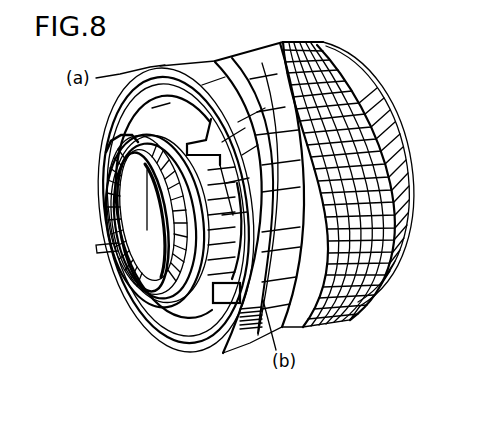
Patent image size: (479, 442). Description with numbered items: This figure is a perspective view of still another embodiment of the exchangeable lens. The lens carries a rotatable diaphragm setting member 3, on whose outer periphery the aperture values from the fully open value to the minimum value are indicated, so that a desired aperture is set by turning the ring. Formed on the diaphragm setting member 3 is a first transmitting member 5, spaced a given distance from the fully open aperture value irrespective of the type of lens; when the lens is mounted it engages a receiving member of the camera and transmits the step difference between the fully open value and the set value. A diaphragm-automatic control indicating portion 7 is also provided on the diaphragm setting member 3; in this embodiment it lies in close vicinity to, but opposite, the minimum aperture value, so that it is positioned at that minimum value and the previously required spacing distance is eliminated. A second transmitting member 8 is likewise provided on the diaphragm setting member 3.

The diaphragm setting member 3 is at (185, 62).
The first transmitting member 5 is at (205, 143).
The diaphragm-automatic control indicating portion 7 is at (233, 250).
The second transmitting member 8 is at (234, 351).